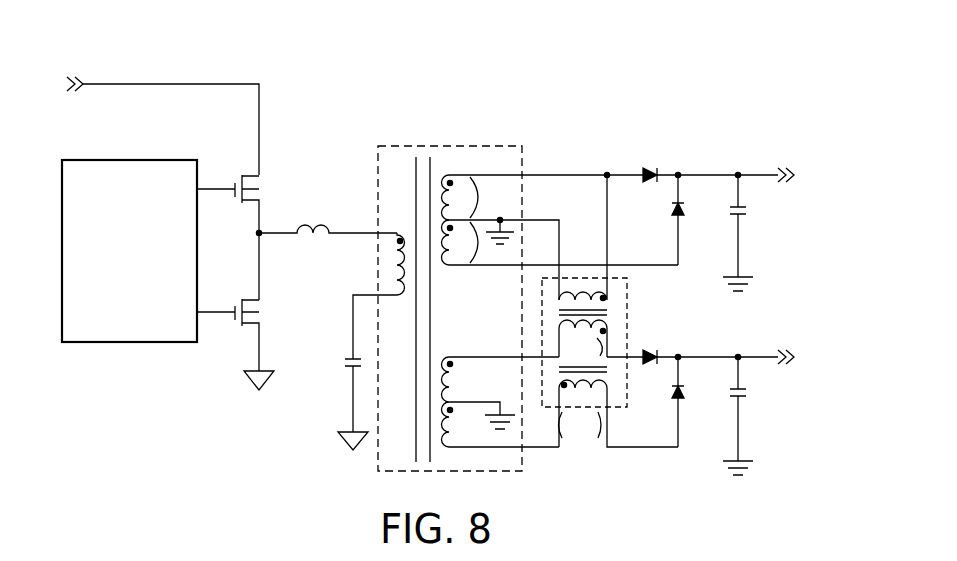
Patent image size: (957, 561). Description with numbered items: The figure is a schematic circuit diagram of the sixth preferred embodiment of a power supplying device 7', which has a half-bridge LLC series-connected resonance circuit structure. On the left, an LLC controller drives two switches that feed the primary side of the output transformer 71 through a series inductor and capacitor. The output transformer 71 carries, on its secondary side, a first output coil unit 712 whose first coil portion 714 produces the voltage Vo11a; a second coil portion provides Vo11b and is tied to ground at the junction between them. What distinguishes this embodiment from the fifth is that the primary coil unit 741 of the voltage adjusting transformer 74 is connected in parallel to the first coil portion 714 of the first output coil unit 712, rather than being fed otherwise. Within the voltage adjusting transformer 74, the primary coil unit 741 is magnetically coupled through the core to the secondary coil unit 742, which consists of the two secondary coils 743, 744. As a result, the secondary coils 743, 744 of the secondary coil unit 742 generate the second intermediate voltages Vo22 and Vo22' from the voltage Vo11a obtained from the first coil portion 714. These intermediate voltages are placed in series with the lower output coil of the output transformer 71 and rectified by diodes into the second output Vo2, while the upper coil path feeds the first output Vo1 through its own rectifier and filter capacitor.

The power supplying device 7' is at (430, 251).
The output transformer 71 is at (505, 145).
The first output coil unit 712 is at (443, 174).
The first coil portion 714 is at (444, 212).
The voltage adjusting transformer 74 is at (628, 298).
The primary coil unit 741 is at (592, 300).
The secondary coil unit 742 is at (554, 372).
The secondary coil 743 is at (560, 343).
The secondary coil 744 is at (598, 393).